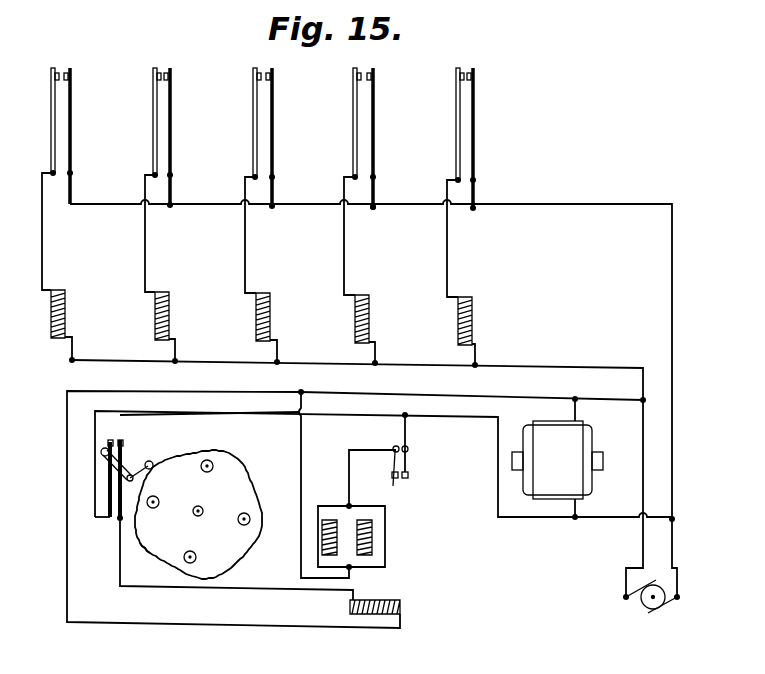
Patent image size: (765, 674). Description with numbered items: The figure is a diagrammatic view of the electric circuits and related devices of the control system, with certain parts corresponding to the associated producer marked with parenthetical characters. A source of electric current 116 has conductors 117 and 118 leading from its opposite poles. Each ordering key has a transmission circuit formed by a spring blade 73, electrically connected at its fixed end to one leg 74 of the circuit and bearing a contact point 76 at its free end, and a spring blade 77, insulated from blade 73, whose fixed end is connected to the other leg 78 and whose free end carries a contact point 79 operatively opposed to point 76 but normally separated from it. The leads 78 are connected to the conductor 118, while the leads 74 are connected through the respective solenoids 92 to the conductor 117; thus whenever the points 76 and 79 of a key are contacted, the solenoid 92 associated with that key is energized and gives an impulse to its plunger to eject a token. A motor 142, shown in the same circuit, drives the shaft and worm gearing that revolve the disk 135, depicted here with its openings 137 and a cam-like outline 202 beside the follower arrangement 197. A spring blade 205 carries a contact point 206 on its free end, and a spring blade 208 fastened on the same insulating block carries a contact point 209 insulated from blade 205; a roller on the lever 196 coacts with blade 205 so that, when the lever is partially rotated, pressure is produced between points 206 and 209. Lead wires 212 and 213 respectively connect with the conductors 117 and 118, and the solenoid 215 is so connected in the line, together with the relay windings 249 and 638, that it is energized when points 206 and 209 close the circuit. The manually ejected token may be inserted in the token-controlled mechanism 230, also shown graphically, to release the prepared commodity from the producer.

The spring blade 73 is at (455, 148).
The contact point 76 is at (458, 82).
The spring blade 77 is at (487, 130).
The contact point 79 is at (470, 74).
The leg of transmission circuit 78 is at (388, 188).
The leg of transmission circuit 74 is at (447, 254).
The solenoid 92 is at (370, 318).
The conductor 117 is at (403, 356).
The conductor 118 is at (672, 471).
The source of electric current 116 is at (645, 603).
The lead wire 213 is at (108, 519).
The lead wire 212 is at (119, 567).
The contact point 206 is at (112, 441).
The contact point 209 is at (118, 440).
The spring blade 208 is at (124, 446).
The spring blade 205 is at (110, 485).
The lever arm 197 is at (128, 468).
The lever 196 is at (138, 483).
The cam wheel 202 is at (186, 461).
The cam hole 137 is at (212, 465).
The disk 135 is at (171, 554).
The relay coil 249 is at (323, 536).
The relay coil 638 is at (372, 532).
The token-controlled mechanism 230 is at (407, 466).
The motor 142 is at (559, 494).
The solenoid 215 is at (402, 608).